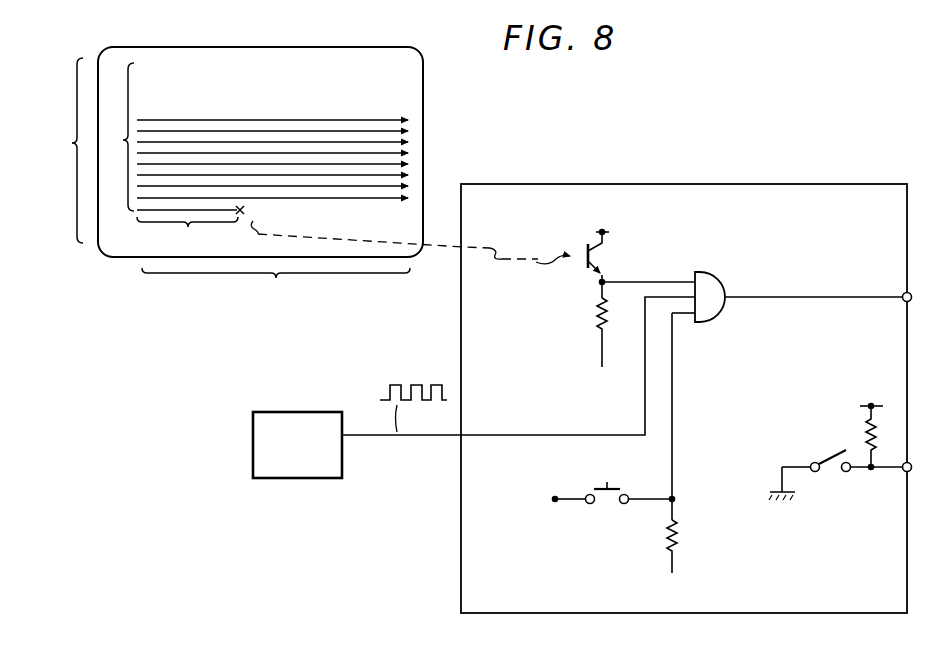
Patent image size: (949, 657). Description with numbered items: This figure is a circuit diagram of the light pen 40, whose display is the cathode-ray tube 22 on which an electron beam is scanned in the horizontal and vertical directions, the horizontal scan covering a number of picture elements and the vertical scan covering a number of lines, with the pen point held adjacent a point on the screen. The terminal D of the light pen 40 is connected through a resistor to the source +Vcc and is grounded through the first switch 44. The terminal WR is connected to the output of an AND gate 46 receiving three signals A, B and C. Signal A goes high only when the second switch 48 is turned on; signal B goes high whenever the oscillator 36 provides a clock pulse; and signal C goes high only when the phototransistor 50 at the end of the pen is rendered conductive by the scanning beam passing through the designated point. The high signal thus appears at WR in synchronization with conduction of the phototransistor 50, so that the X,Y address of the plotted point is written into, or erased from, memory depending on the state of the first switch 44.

The cathode-ray tube 22 is at (413, 87).
The light pen 40 is at (841, 200).
The oscillator 36 is at (313, 467).
The phototransistor 50 is at (586, 262).
The AND gate 46 is at (712, 307).
The switch SW2 48 is at (613, 487).
The switch SW1 44 is at (820, 455).